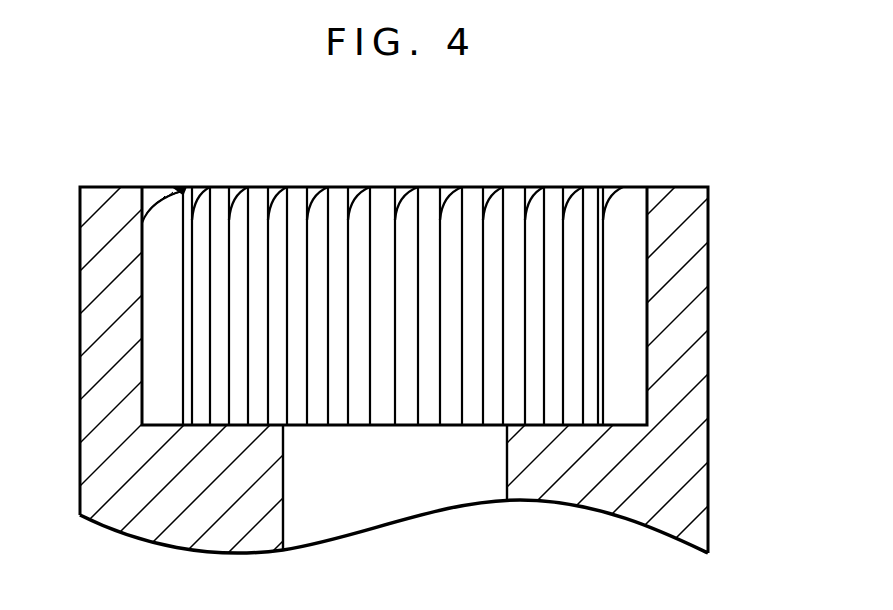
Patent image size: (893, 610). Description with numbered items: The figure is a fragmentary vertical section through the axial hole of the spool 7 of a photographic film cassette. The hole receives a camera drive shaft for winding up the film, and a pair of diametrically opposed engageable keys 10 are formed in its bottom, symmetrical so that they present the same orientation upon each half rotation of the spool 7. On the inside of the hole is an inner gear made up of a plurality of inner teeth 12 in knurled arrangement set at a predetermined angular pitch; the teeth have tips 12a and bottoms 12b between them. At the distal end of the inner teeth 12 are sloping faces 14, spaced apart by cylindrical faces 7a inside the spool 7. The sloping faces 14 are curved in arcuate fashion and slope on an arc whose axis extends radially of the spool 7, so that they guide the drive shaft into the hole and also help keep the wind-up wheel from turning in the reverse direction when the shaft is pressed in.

The spool 7 is at (672, 212).
The cylindrical faces 7a is at (168, 186).
The engageable keys 10 is at (292, 511).
The inner teeth 12 is at (281, 262).
The tips of the inner teeth 12a is at (422, 390).
The bottoms between the inner teeth 12b is at (398, 387).
The sloping faces 14 is at (410, 187).